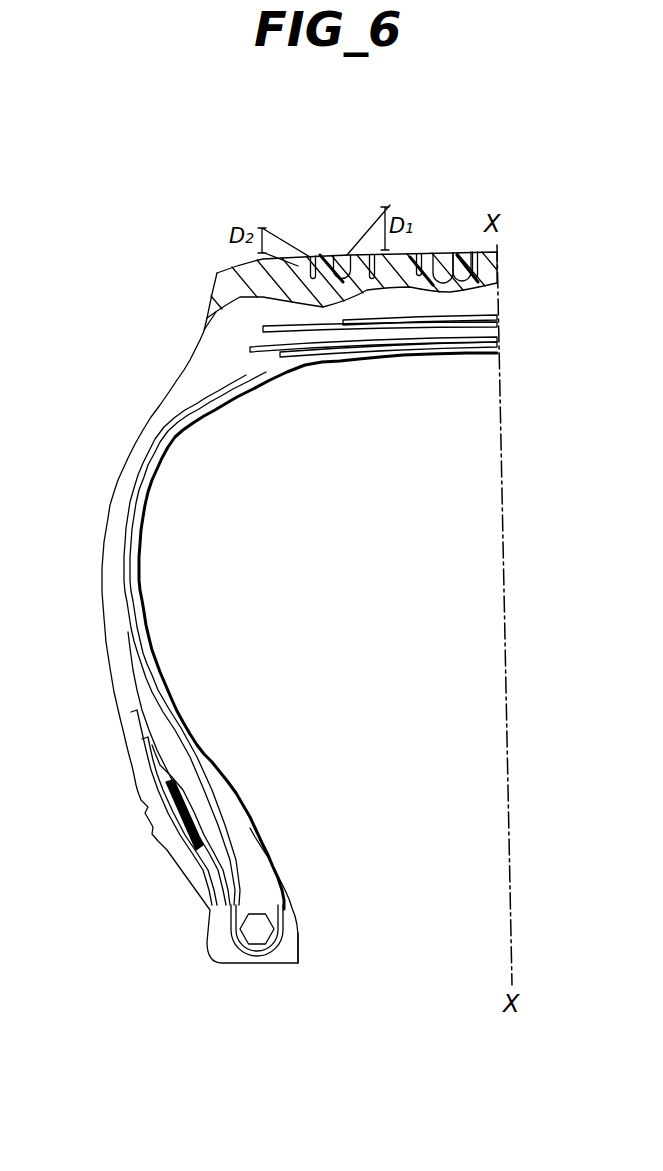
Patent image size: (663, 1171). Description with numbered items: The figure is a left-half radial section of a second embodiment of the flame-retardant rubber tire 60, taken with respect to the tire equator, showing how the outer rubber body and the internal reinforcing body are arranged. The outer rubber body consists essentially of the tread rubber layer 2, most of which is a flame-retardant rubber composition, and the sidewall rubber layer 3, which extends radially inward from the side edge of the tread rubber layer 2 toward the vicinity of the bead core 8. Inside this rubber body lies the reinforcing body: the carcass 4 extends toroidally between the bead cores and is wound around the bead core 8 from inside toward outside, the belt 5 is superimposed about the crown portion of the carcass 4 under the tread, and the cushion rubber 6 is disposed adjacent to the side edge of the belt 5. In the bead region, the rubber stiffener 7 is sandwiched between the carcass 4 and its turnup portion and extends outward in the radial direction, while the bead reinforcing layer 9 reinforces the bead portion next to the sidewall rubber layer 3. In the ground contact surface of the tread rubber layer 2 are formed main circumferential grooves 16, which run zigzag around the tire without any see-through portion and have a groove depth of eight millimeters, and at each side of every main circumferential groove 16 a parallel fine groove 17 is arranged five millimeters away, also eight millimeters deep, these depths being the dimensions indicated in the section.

The pneumatic tire 60 is at (218, 258).
The tread rubber layer 2 is at (216, 278).
The fine groove 17 is at (313, 256).
The main circumferential groove 16 is at (345, 256).
The belt 5 is at (480, 312).
The cushion rubber 6 is at (252, 368).
The carcass 4 is at (160, 462).
The sidewall rubber layer 3 is at (105, 572).
The rubber stiffener 7 is at (247, 857).
The bead reinforcing layer 9 is at (165, 785).
The bead core 8 is at (262, 926).